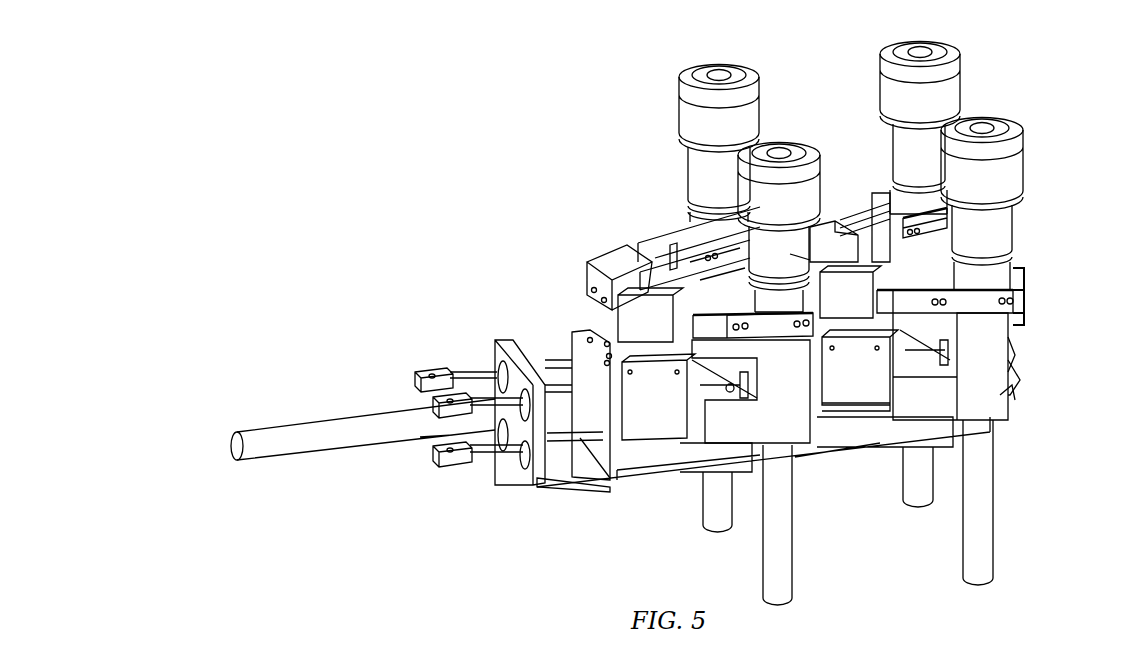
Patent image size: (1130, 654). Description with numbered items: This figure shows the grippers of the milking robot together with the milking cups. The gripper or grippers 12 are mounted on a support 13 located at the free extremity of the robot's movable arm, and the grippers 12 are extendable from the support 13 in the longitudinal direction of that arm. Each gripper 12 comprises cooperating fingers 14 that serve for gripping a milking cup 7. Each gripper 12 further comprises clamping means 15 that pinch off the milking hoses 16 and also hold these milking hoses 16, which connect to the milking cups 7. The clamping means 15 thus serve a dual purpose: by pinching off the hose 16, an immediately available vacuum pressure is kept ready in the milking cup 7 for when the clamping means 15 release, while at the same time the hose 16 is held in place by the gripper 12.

The milking cup 7 is at (746, 66).
The gripper 12 is at (623, 243).
The support 13 is at (531, 483).
The cooperating fingers 14 is at (1025, 280).
The clamping means 15 is at (1015, 397).
The milking hose 16 is at (795, 571).